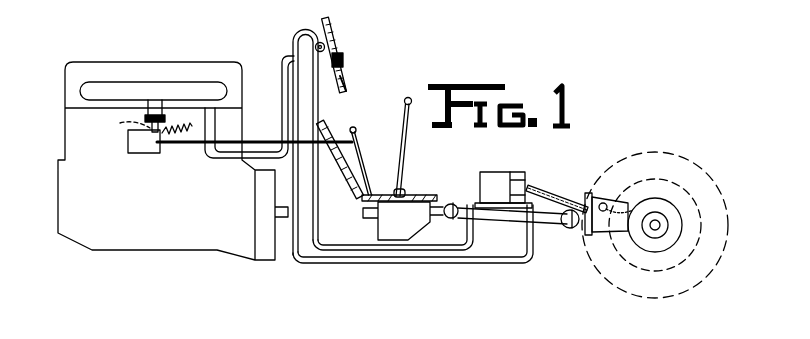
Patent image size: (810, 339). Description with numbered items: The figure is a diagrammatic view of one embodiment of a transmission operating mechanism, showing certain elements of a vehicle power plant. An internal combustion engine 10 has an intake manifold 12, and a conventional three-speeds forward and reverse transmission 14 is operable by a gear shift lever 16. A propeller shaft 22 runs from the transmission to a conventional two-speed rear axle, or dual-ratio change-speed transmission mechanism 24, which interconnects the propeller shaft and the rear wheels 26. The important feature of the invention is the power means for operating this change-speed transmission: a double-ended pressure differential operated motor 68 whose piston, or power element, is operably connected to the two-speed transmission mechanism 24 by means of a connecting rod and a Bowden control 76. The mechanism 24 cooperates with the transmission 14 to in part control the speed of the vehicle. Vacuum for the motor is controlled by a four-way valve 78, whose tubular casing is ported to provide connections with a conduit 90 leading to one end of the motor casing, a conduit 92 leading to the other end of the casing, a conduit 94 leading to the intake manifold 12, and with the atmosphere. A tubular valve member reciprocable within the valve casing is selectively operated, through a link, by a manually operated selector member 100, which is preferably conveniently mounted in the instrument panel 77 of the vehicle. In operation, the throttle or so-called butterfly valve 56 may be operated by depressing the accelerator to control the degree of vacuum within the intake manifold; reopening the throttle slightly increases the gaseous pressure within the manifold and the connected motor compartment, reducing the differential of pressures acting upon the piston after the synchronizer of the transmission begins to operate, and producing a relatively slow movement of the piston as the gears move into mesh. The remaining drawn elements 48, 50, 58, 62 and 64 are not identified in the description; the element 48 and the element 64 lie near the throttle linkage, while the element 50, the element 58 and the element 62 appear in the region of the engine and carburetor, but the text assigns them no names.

The internal combustion engine 10 is at (82, 223).
The intake manifold 12 is at (123, 92).
The three-speeds forward and reverse transmission 14 is at (390, 222).
The gear shift lever 16 is at (406, 168).
The propeller shaft 22 is at (550, 224).
The two-speed rear axle or dual-ratio change-speed transmission mechanism 24 is at (618, 200).
The rear wheels 26 is at (705, 188).
The throttle rod 48 is at (357, 132).
The vacuum line 50 is at (258, 150).
The throttle or butterfly valve 56 is at (120, 123).
The governor housing 58 is at (137, 156).
The return spring 62 is at (173, 124).
The accelerator pedal 64 is at (294, 138).
The double-ended pressure differential operated motor 68 is at (495, 182).
The Bowden control 76 is at (557, 188).
The instrument panel 77 is at (344, 76).
The four-way valve 78 is at (332, 34).
The conduit 90 is at (390, 248).
The conduit 92 is at (467, 264).
The conduit 94 is at (280, 64).
The manually operated selector member 100 is at (344, 52).